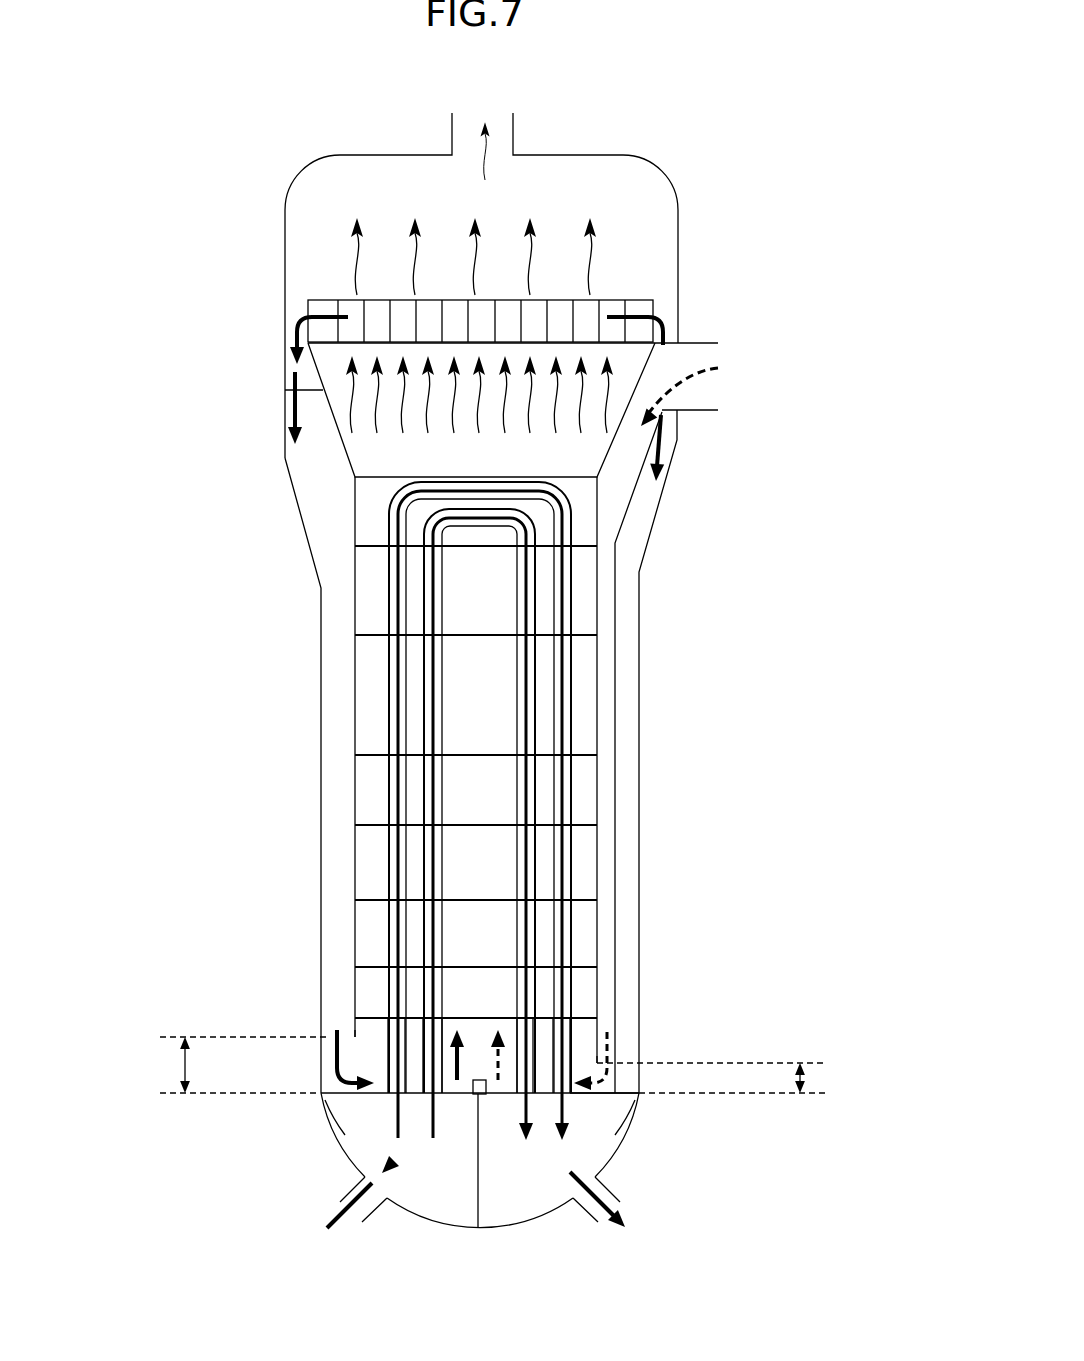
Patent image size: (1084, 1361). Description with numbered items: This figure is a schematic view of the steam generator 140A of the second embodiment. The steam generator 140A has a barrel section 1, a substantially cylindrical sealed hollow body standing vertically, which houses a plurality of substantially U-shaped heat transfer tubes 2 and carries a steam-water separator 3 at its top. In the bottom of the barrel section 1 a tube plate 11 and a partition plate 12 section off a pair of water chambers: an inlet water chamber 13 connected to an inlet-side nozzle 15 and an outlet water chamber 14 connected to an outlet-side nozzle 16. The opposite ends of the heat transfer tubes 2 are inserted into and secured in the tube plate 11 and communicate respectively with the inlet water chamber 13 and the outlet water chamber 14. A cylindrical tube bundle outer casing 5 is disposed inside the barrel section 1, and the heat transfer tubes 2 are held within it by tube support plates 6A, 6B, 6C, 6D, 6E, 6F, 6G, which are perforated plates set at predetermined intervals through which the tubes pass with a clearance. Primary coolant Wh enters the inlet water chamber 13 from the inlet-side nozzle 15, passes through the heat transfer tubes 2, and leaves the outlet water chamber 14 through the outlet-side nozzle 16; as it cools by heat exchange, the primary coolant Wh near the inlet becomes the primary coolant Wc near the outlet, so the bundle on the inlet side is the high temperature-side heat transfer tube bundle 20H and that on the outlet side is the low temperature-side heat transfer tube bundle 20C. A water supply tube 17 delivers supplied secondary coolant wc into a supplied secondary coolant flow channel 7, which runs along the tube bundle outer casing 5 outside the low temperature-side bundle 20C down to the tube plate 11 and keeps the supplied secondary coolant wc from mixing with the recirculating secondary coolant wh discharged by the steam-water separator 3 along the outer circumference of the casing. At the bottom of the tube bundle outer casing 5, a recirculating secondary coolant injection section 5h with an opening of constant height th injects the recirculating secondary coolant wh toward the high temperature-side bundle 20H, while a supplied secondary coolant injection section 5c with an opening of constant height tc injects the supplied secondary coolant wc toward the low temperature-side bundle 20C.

The steam generator 140A is at (694, 100).
The barrel section 1 is at (285, 241).
The heat transfer tubes 2 is at (382, 672).
The steam-water separator 3 is at (642, 292).
The tube bundle outer casing 5 is at (599, 718).
The recirculating secondary coolant injection section 5h is at (352, 1060).
The supplied secondary coolant injection section 5c is at (610, 1020).
The tube support plate 6A is at (583, 1018).
The tube support plate 6B is at (583, 967).
The tube support plate 6C is at (583, 900).
The tube support plate 6D is at (583, 826).
The tube support plate 6E is at (583, 755).
The tube support plate 6F is at (585, 635).
The tube support plate 6G is at (585, 546).
The supplied secondary coolant flow channel 7 is at (614, 677).
The tube plate 11 is at (600, 1100).
The partition plate 12 is at (483, 1205).
The inlet water chamber 13 is at (342, 1128).
The outlet water chamber 14 is at (598, 1150).
The inlet-side nozzle 15 is at (380, 1198).
The outlet-side nozzle 16 is at (583, 1210).
The water supply tube 17 is at (700, 343).
The high temperature-side heat transfer tube bundle 20H is at (420, 850).
The low temperature-side heat transfer tube bundle 20C is at (535, 772).
The recirculating secondary coolant wh is at (285, 411).
The supplied secondary coolant wc is at (697, 373).
The primary coolant Wh is at (427, 918).
The primary coolant Wc is at (527, 920).
The opening height th is at (240, 1065).
The opening height tc is at (717, 1079).